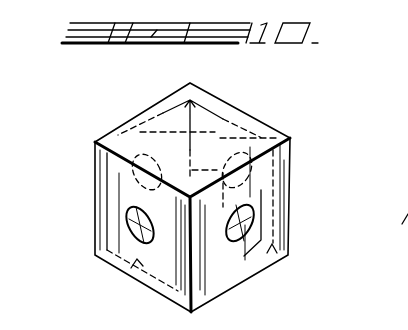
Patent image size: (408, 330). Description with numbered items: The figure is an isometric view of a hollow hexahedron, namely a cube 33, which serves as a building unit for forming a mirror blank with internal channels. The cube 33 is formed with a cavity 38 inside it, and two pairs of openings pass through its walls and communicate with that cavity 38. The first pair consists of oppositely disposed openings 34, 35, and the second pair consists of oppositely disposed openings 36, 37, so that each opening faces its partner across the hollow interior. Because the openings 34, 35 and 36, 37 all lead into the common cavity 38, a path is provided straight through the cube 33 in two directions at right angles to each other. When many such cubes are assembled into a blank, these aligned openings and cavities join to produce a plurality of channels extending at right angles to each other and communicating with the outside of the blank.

The cube 33 is at (283, 133).
The opening 34 is at (130, 176).
The opening 35 is at (256, 221).
The opening 36 is at (127, 221).
The opening 37 is at (243, 157).
The cavity 38 is at (130, 274).